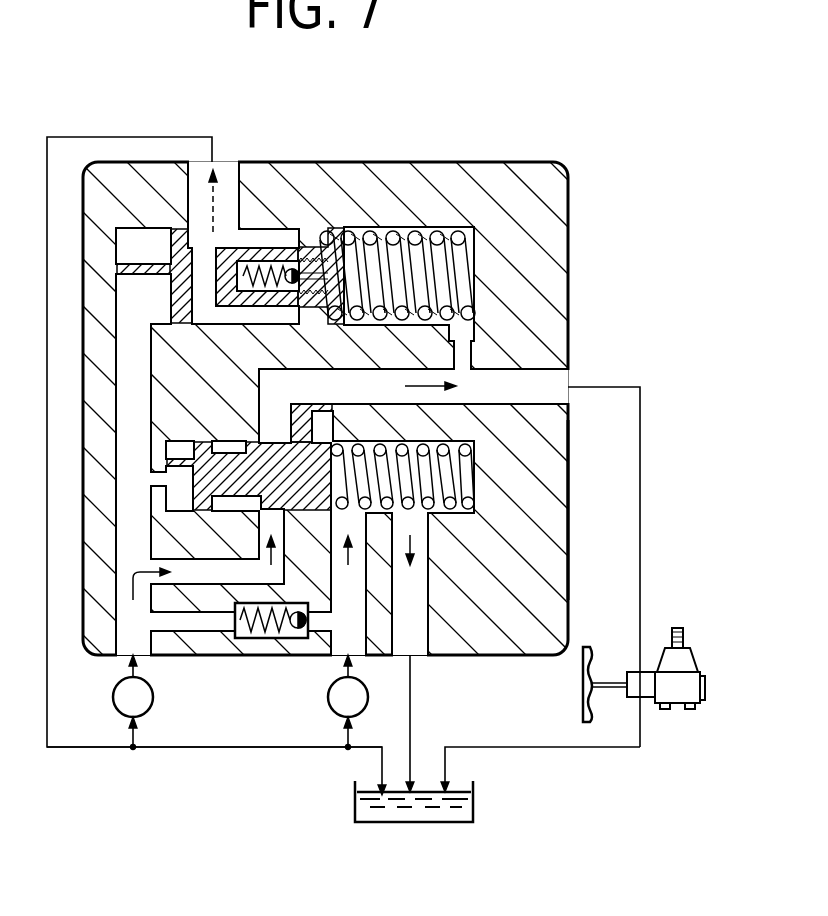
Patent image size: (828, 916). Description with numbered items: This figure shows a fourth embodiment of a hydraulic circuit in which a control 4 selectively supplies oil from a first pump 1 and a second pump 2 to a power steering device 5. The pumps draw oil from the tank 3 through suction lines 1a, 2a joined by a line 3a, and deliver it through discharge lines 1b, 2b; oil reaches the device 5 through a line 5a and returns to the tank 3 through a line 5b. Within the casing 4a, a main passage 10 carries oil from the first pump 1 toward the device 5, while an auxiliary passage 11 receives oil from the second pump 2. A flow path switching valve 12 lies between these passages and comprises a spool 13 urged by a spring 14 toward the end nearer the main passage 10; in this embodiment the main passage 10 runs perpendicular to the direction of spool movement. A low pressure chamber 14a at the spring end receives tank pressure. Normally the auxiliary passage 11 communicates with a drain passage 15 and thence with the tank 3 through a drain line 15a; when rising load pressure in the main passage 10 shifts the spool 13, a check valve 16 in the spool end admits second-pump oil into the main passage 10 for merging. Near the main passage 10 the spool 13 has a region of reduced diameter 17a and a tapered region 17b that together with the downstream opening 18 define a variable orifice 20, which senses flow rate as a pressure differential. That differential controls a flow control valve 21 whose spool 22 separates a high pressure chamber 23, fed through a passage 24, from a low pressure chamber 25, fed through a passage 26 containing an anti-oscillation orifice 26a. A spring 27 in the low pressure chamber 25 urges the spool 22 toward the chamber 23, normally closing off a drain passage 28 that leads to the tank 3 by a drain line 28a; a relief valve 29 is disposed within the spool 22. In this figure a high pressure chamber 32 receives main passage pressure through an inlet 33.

The first pump 1 is at (151, 703).
The suction line 1a is at (128, 734).
The discharge line 1b is at (128, 666).
The second pump 2 is at (368, 697).
The suction line 2a is at (351, 735).
The discharge line 2b is at (352, 666).
The tank 3 is at (402, 823).
The line 3a is at (268, 749).
The control 4 is at (551, 161).
The casing 4a is at (555, 210).
The power steering device 5 is at (680, 698).
The line 5a is at (642, 580).
The line 5b is at (548, 749).
The main passage 10 is at (529, 393).
The auxiliary passage 11 is at (338, 650).
The flow path switching valve 12 is at (308, 438).
The spool 13 is at (240, 482).
The spring 14 is at (447, 452).
The low pressure chamber 14a is at (455, 486).
The drain passage 15 is at (420, 590).
The drain line 15a is at (412, 697).
The check valve 16 is at (298, 632).
The region of reduced diameter 17a is at (257, 430).
The tapered region 17b is at (243, 440).
The downstream opening 18 is at (278, 445).
The variable orifice 20 is at (279, 441).
The flow control valve 21 is at (283, 229).
The spool 22 is at (250, 250).
The high pressure chamber 23 is at (145, 245).
The passage 24 is at (130, 392).
The low pressure chamber 25 is at (455, 273).
The passage 26 is at (465, 330).
The orifice 26a is at (470, 343).
The spring 27 is at (415, 233).
The drain passage 28 is at (226, 160).
The drain line 28a is at (152, 137).
The relief valve 29 is at (306, 226).
The high pressure chamber 32 is at (180, 500).
The inlet 33 is at (152, 479).